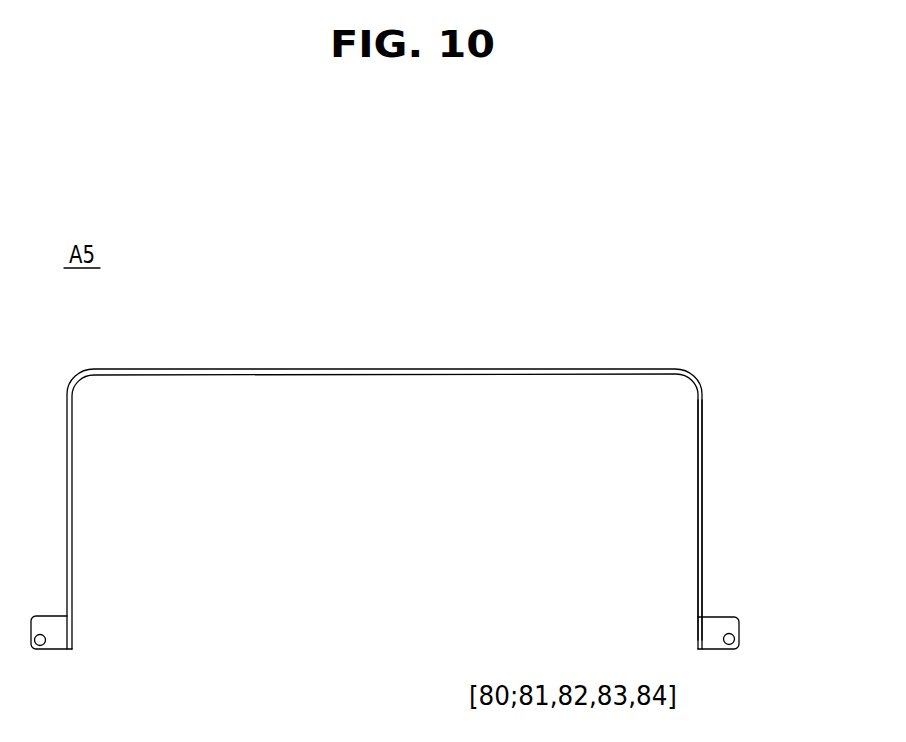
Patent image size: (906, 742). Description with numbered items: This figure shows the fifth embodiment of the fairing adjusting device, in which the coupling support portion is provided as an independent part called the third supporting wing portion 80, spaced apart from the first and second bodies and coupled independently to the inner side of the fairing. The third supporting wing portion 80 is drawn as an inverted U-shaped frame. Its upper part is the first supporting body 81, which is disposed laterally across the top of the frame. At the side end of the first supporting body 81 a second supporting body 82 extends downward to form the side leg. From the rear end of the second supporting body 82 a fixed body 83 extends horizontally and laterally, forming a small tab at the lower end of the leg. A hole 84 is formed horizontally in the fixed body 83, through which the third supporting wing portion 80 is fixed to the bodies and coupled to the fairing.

The third supporting wing portion 80 is at (411, 474).
The first supporting body 81 is at (598, 369).
The second supporting body 82 is at (702, 446).
The fixed body 83 is at (714, 620).
The fixing hole 84 is at (735, 638).